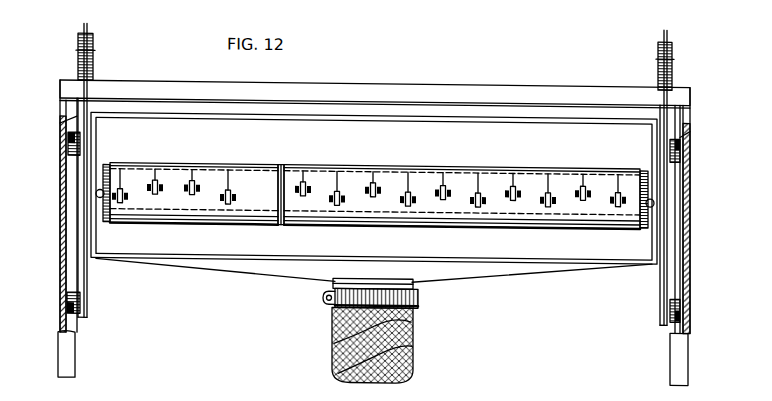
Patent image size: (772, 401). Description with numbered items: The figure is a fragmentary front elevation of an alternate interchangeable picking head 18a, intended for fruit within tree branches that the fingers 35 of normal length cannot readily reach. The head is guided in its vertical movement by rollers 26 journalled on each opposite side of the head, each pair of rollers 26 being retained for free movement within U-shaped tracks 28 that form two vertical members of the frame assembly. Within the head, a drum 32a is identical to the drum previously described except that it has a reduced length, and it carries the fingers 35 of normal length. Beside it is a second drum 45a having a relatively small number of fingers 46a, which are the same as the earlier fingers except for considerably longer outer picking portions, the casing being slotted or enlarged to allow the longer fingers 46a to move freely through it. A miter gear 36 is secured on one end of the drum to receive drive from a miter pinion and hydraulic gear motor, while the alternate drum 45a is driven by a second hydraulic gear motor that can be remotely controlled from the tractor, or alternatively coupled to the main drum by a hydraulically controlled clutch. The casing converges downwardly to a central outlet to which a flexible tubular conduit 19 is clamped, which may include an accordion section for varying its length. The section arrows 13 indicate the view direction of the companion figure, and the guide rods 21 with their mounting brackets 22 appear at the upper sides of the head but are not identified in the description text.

The section line for FIG. 13 is at (47, 192).
The header beam 18a is at (375, 87).
The collecting jar 19 is at (415, 336).
The guide rod 21 is at (82, 22).
The mounting bracket 22 is at (95, 50).
The clamp bolt 26 is at (68, 138).
The support post 28 is at (70, 347).
The right manifold trough 32a is at (468, 217).
The nozzle 35 is at (337, 187).
The end cap 36 is at (107, 173).
The left manifold trough 45a is at (207, 213).
The nozzle 46a is at (156, 178).